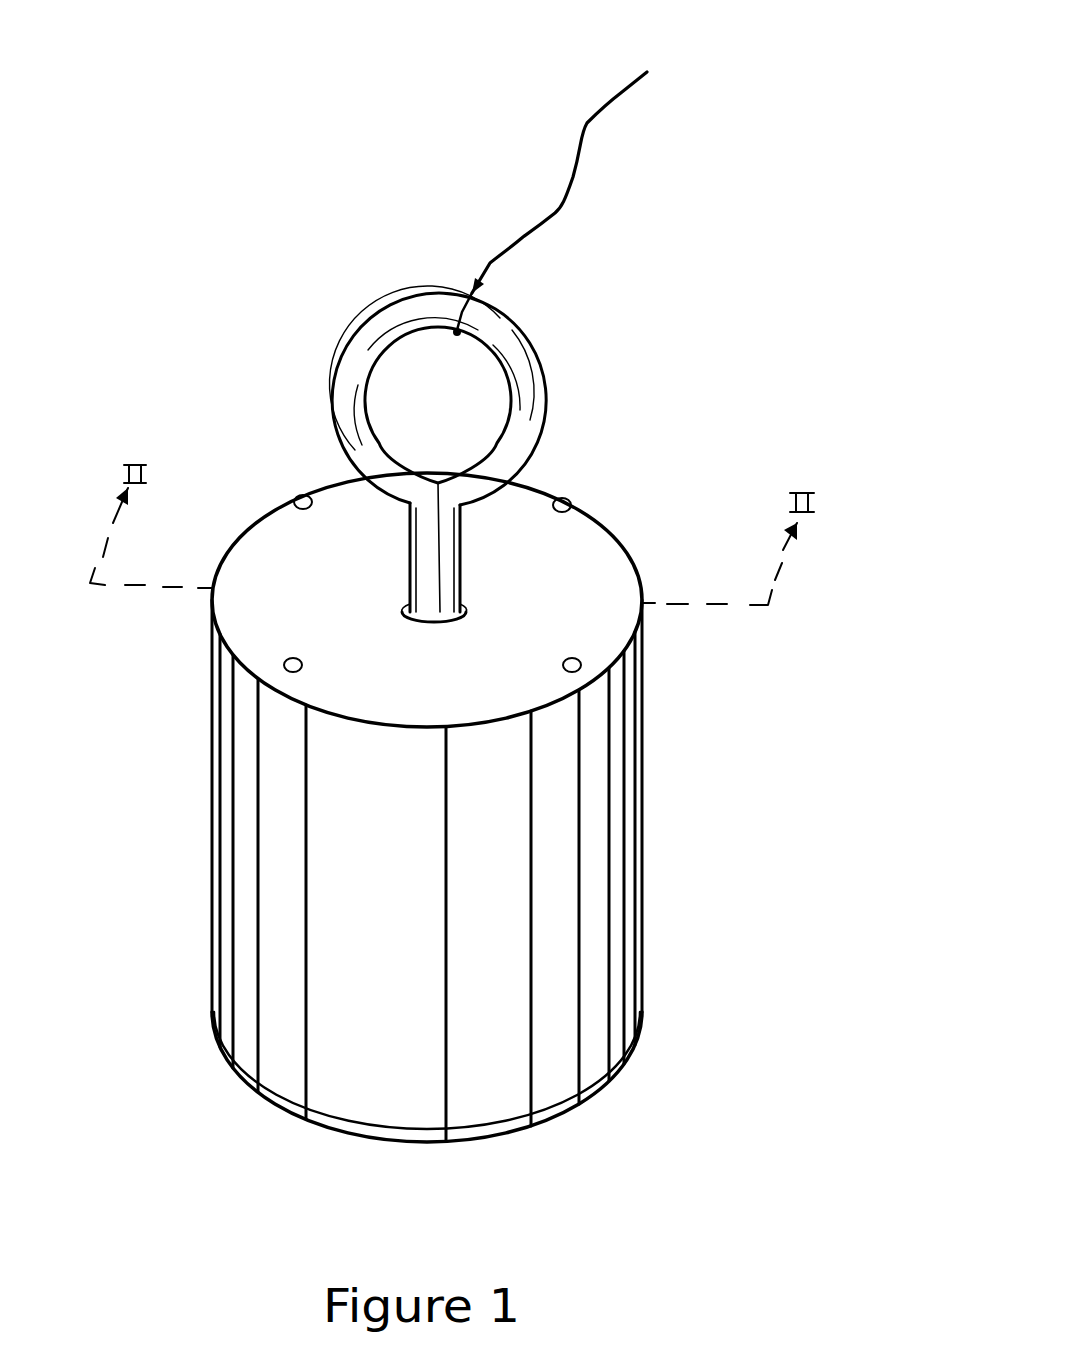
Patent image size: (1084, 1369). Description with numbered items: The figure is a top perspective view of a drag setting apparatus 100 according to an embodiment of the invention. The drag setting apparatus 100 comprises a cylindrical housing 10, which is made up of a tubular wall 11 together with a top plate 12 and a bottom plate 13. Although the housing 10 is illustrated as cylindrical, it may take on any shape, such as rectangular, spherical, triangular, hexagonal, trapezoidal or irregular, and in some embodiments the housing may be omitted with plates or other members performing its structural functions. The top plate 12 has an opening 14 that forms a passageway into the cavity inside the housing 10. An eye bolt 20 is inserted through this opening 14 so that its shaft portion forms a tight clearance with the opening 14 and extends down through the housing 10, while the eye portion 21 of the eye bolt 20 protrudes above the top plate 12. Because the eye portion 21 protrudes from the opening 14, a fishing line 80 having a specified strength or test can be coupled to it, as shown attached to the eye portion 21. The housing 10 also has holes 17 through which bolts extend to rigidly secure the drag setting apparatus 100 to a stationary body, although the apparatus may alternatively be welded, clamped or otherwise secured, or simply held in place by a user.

The drag setting apparatus 100 is at (815, 163).
The cylindrical housing 10 is at (638, 545).
The tubular wall 11 is at (595, 832).
The top plate 12 is at (580, 522).
The bottom plate 13 is at (500, 1125).
The opening 14 is at (394, 618).
The holes 17 is at (296, 498).
The eye bolt 20 is at (398, 512).
The eye portion 21 is at (435, 305).
The fishing line 80 is at (622, 92).